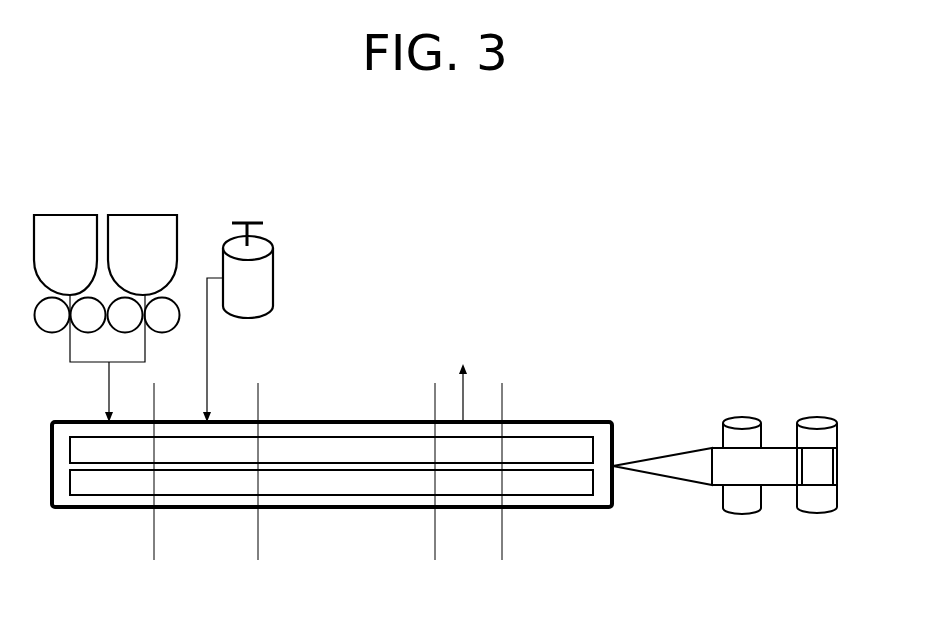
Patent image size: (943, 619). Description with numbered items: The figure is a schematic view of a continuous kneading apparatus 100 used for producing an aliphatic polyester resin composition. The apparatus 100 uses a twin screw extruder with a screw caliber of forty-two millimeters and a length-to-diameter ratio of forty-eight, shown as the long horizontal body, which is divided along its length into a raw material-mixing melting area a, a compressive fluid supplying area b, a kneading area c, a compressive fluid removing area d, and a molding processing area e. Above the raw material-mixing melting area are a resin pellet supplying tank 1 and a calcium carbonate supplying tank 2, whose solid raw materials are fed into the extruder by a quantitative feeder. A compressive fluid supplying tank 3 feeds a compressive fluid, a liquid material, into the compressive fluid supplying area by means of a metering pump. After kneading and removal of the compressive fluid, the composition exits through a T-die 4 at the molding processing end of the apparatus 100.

The resin pellet supplying tank 1 is at (67, 230).
The calcium carbonate supplying tank 2 is at (140, 230).
The compressive fluid supplying tank 3 is at (263, 247).
The T-die 4 is at (680, 462).
The continuous kneading apparatus 100 is at (610, 240).